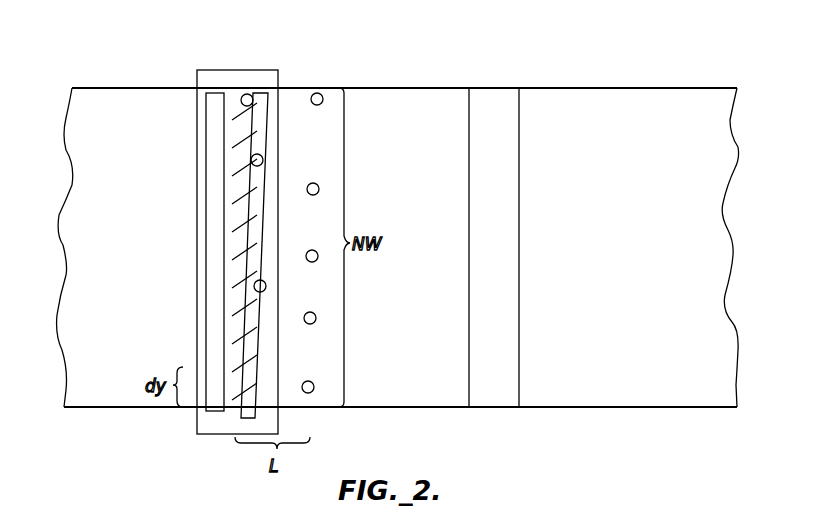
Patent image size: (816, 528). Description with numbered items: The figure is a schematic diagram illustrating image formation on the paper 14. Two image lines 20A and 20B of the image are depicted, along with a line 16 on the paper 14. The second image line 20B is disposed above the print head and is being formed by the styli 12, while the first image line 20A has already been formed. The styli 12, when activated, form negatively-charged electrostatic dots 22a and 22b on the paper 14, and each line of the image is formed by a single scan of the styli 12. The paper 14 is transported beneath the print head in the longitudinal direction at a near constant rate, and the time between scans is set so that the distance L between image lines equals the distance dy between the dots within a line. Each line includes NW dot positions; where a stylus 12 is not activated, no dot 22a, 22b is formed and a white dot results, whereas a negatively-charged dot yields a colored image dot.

The styli 12 is at (239, 102).
The paper 14 is at (567, 93).
The line on web 16 is at (495, 103).
The first image line 20A is at (326, 218).
The second image line 20B is at (256, 232).
The negatively-charged electrostatic dot 22a is at (322, 94).
The negatively-charged electrostatic dot 22b is at (263, 159).